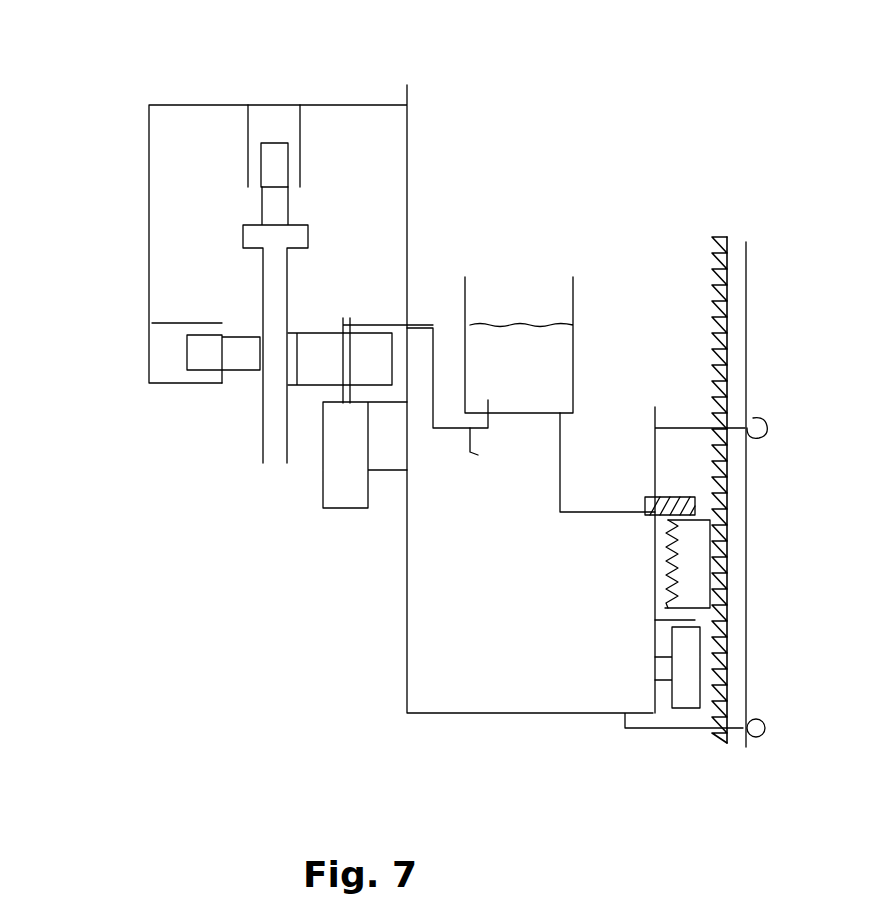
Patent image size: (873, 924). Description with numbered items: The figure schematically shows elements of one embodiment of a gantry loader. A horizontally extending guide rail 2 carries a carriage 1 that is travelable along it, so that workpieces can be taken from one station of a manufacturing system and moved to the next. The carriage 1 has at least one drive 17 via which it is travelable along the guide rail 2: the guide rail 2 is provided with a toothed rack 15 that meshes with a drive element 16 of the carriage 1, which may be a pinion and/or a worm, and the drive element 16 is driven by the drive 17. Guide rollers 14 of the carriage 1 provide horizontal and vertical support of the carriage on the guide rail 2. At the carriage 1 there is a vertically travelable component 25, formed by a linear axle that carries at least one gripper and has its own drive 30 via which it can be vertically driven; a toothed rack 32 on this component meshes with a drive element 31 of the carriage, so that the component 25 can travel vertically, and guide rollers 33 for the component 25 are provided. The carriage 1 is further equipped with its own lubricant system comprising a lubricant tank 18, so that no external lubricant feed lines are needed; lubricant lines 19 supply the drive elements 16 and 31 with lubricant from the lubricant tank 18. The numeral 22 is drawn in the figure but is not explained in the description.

The carriage 1 is at (488, 152).
The guide rail 2 is at (265, 283).
The guide roller 14 is at (275, 158).
The toothed rack 15 is at (290, 345).
The drive element 16 is at (370, 368).
The drive 17 is at (343, 497).
The lubricant tank 18 is at (562, 380).
The lubricant line 19 is at (557, 459).
The pivot 22 is at (762, 737).
The vertically travelable component 25 is at (737, 318).
The drive 30 is at (688, 667).
The drive element 31 is at (692, 570).
The toothed rack 32 is at (727, 490).
The guide roller 33 is at (760, 420).